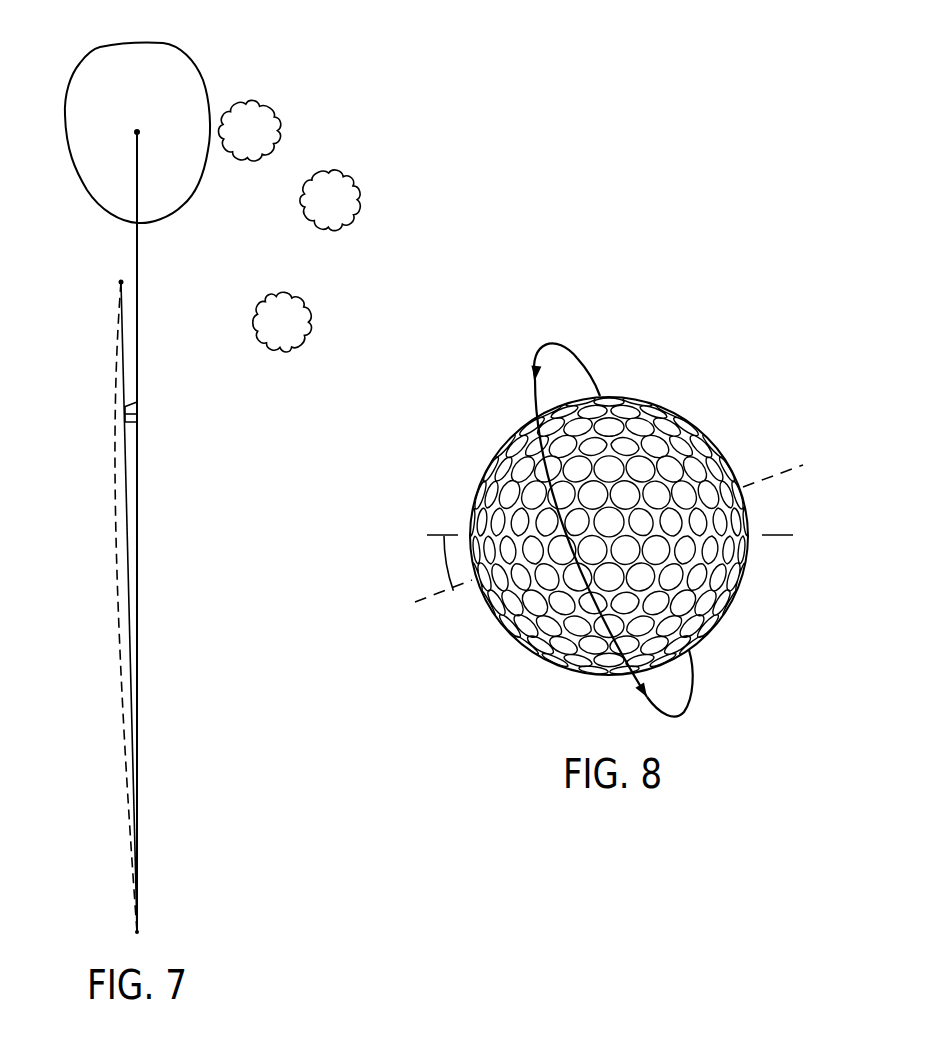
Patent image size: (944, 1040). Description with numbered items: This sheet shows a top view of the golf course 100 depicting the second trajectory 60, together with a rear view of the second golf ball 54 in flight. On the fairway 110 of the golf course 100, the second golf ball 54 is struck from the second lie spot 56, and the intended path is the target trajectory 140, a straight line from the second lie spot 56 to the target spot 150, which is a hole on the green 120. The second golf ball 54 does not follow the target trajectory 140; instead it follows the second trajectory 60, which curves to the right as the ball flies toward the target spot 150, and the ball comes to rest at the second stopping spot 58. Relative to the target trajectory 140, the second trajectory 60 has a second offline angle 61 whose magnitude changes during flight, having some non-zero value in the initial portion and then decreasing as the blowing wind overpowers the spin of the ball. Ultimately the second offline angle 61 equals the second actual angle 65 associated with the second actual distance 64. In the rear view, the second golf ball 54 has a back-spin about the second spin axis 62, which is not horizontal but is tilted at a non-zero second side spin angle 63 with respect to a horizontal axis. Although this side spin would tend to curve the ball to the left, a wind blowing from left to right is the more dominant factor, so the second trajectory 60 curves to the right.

In FIG. 8, the second golf ball 54 is at (712, 417).
In FIG. 7, the second lie spot 56 is at (137, 932).
In FIG. 7, the second stopping spot 58 is at (121, 282).
In FIG. 7, the second trajectory 60 is at (115, 478).
In FIG. 7, the second offline angle 61 is at (124, 407).
In FIG. 8, the second spin axis 62 is at (438, 596).
In FIG. 8, the second side spin angle 63 is at (444, 562).
In FIG. 7, the second actual distance 64 is at (127, 525).
In FIG. 7, the second actual angle 65 is at (133, 420).
In FIG. 7, the golf course 100 is at (308, 117).
In FIG. 7, the fairway 110 is at (193, 489).
In FIG. 7, the green 120 is at (173, 62).
In FIG. 7, the target trajectory 140 is at (137, 580).
In FIG. 7, the target spot 150 is at (137, 132).